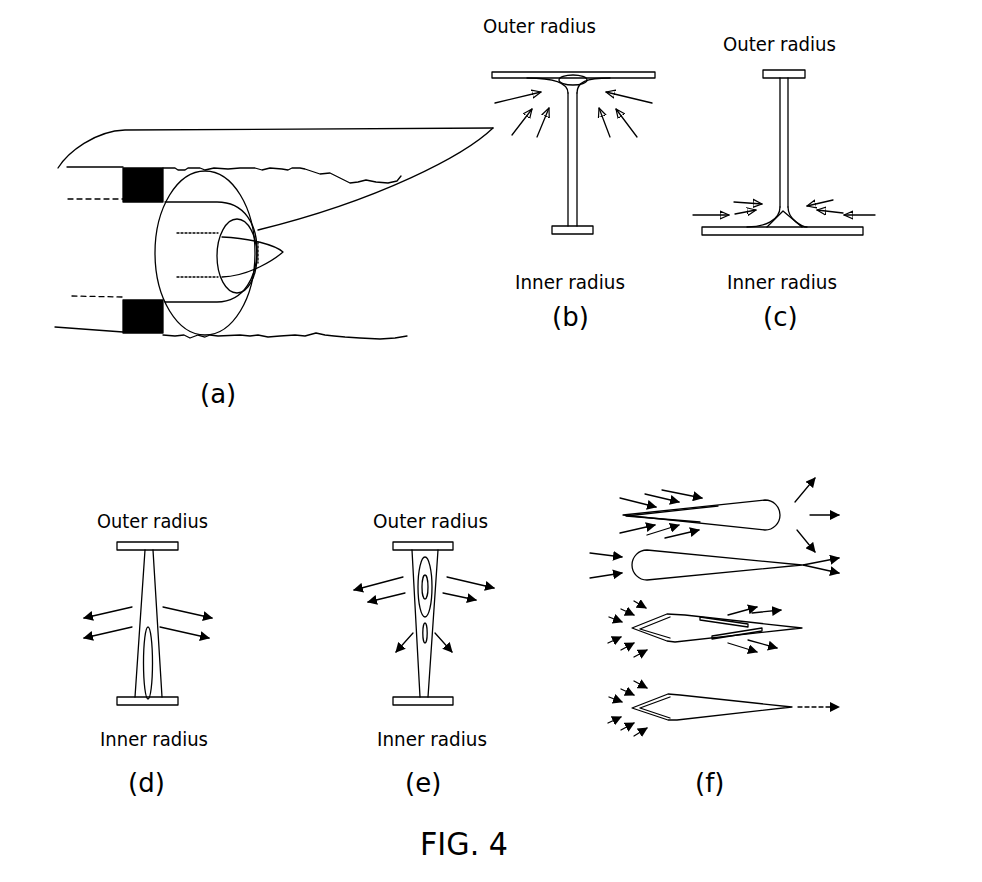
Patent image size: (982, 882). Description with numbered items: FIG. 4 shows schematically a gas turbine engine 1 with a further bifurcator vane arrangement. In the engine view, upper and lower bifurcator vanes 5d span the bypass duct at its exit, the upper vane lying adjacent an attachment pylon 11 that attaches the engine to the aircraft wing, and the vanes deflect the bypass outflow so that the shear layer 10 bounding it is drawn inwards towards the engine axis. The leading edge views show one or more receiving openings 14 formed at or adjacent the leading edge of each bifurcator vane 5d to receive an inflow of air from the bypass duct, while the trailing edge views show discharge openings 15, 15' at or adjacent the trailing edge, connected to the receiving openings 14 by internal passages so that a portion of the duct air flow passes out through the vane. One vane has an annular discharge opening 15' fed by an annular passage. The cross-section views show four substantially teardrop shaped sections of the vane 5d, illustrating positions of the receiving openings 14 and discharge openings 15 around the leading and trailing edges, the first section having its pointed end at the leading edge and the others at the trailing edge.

The gas turbine engine 1 is at (116, 349).
The bifurcator vane 5d is at (148, 168).
The shear layer 10 is at (350, 337).
The attachment pylon 11 is at (401, 168).
The receiving opening 14 is at (593, 72).
The discharge opening 15 is at (463, 581).
The annular discharge opening 15' is at (465, 597).